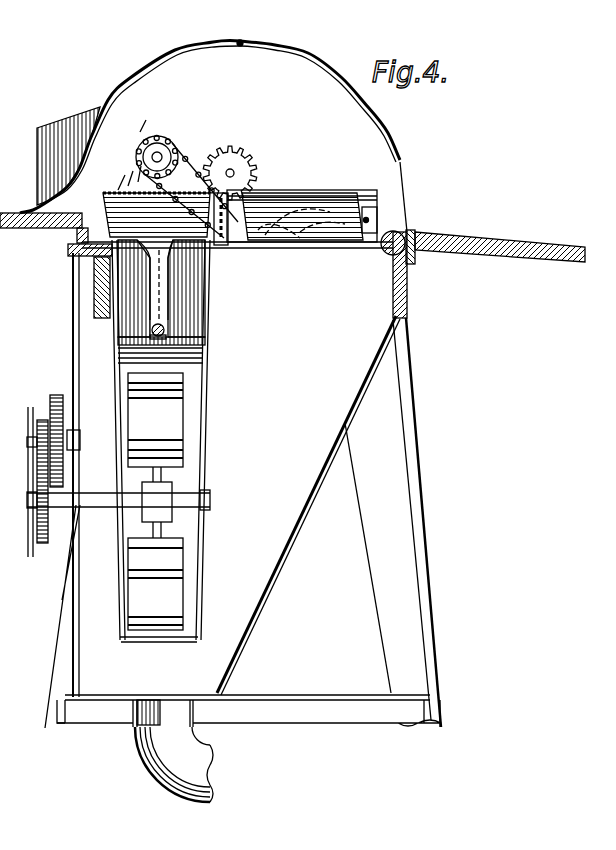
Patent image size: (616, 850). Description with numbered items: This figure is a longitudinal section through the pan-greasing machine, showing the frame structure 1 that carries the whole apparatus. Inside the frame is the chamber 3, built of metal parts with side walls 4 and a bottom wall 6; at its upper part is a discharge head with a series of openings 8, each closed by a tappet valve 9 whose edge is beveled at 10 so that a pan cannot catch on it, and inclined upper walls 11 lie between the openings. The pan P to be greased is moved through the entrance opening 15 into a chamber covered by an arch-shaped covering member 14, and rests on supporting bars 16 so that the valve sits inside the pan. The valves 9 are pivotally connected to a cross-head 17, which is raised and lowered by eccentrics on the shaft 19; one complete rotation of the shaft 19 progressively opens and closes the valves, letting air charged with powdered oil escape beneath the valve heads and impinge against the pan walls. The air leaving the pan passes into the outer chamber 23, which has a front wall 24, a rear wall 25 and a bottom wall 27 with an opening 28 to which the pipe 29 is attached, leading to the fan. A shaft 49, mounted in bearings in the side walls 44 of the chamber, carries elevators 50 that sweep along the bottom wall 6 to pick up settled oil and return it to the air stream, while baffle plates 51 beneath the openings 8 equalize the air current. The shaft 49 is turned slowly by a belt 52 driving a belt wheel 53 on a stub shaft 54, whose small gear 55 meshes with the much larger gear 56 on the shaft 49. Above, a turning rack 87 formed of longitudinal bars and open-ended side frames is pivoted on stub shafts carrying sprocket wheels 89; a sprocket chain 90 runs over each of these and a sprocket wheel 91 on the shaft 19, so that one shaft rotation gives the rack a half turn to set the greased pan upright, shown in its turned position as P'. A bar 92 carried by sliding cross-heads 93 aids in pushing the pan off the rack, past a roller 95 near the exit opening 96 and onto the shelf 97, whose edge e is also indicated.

The frame structure 1 is at (413, 412).
The chamber 3 is at (215, 385).
The side walls 4 is at (207, 331).
The bottom wall 6 is at (158, 641).
The openings 8 is at (183, 318).
The valve 9 is at (170, 246).
The beveled edges 10 is at (103, 218).
The inclined upper walls 11 is at (220, 275).
The arch-shaped covering member 14 is at (321, 58).
The entrance opening 15 is at (340, 95).
The supporting bars 16 is at (95, 249).
The cross-head 17 is at (165, 334).
The shaft 19 is at (146, 148).
The chamber 23 is at (355, 346).
The front wall 24 is at (76, 361).
The rear wall 25 is at (296, 546).
The bottom wall 27 is at (118, 704).
The opening 28 is at (172, 706).
The pipe 29 is at (172, 760).
The side walls 44 is at (205, 544).
The shaft 49 is at (210, 501).
The elevators 50 is at (187, 452).
The baffle plates 51 is at (200, 358).
The belt 52 is at (58, 396).
The belt wheel 53 is at (50, 403).
The stub shaft 54 is at (25, 443).
The gear 55 is at (48, 433).
The gear 56 is at (40, 546).
The turning rack 87 is at (308, 192).
The sprocket wheels 89 is at (325, 265).
The sprocket chain 90 is at (220, 160).
The sprocket wheel 91 is at (157, 136).
The bar 92 is at (378, 218).
The cross-heads 93 is at (9, 558).
The roller 95 is at (415, 257).
The exit opening 96 is at (401, 173).
The shelf 97 is at (556, 258).
The pan P is at (121, 155).
The plate P' is at (351, 174).
The edge e is at (12, 213).